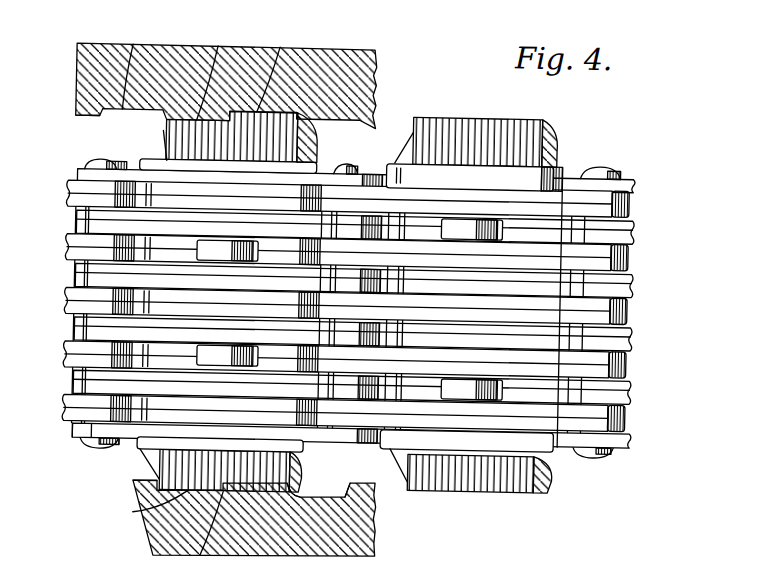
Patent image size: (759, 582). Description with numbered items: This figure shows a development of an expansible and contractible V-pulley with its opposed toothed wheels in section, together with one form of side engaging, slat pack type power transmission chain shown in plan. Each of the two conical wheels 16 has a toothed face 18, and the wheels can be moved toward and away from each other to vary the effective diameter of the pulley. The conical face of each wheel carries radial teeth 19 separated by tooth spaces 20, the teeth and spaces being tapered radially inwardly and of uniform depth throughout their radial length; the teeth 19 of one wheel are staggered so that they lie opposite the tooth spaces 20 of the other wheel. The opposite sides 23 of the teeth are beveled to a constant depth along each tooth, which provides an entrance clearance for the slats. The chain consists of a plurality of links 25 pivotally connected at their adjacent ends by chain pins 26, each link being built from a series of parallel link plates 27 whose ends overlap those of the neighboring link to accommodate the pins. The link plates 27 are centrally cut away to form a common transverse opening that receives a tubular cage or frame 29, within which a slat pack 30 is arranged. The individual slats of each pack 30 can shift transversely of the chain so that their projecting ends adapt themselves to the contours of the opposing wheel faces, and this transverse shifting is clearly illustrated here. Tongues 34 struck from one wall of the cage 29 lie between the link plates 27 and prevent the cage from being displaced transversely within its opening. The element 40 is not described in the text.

The conical wheel 16 is at (176, 36).
The toothed face 18 is at (84, 120).
The radial tooth 19 is at (219, 42).
The tooth space 20 is at (134, 42).
The beveled tooth side 23 is at (165, 110).
The link 25 is at (336, 160).
The chain pin 26 is at (106, 158).
The link plate 27 is at (638, 279).
The cage or frame 29 is at (566, 160).
The slat pack 30 is at (492, 108).
The tongue 34 is at (206, 246).
The fin carrier 40 is at (166, 128).